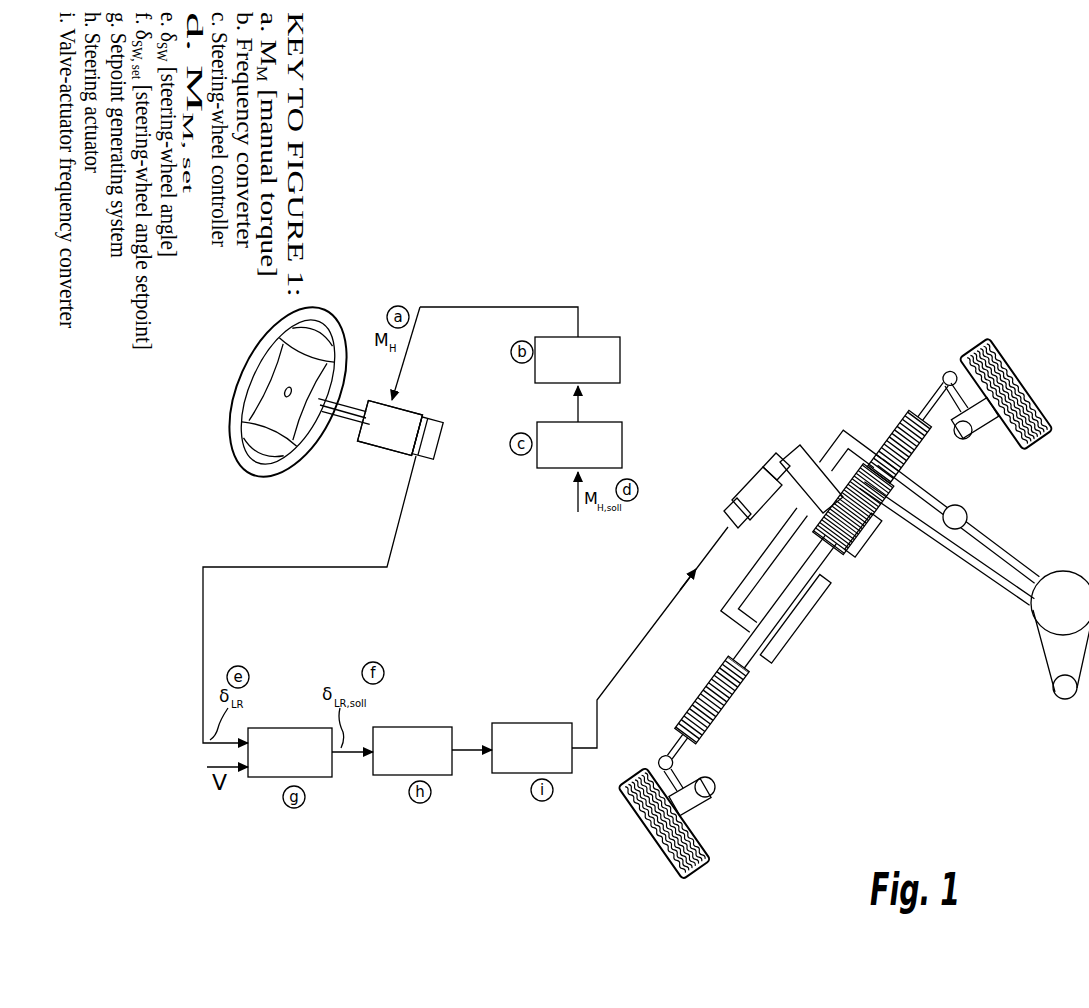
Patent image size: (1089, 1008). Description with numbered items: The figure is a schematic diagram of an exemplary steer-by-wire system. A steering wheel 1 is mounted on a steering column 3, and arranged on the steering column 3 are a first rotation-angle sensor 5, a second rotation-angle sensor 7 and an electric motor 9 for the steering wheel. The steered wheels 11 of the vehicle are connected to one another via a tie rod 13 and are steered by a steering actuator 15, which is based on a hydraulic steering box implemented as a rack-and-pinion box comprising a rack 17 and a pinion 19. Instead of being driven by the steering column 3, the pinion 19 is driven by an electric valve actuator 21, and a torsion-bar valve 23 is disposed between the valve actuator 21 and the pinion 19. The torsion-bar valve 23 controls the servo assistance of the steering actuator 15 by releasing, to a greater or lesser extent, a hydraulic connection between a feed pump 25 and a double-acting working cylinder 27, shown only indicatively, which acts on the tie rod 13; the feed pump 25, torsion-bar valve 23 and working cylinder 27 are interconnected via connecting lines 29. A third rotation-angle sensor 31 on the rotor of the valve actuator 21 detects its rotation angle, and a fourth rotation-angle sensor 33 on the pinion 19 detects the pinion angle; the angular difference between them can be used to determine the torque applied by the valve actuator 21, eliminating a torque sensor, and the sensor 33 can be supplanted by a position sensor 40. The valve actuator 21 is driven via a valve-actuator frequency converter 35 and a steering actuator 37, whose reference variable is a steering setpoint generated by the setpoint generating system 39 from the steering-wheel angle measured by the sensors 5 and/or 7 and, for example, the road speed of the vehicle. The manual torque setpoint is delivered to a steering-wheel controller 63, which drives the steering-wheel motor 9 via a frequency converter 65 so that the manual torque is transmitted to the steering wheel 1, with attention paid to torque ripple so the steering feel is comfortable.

The steering wheel 1 is at (262, 356).
The steering column 3 is at (343, 415).
The first rotation-angle sensor 5 is at (425, 415).
The second rotation-angle sensor 7 is at (437, 440).
The electric motor for the steering wheel 9 is at (380, 435).
The steered wheels 11 is at (1023, 387).
The tie rod 13 is at (940, 392).
The steering actuator 15 is at (786, 388).
The rack 17 is at (873, 507).
The pinion 19 is at (823, 553).
The valve actuator 21 is at (755, 482).
The torsion-bar valve 23 is at (805, 460).
The feed pump 25 is at (1066, 580).
The double-acting working cylinder 27 is at (740, 655).
The connecting lines 29 is at (987, 530).
The third rotation-angle sensor 31 is at (735, 527).
The fourth rotation-angle sensor 33 is at (850, 538).
The valve-actuator frequency converter 35 is at (508, 775).
The steering actuator (steering controller) 37 is at (385, 777).
The setpoint generating system 39 is at (255, 779).
The position sensor 40 is at (800, 620).
The steering-wheel controller 63 is at (622, 458).
The frequency converter 65 is at (620, 350).